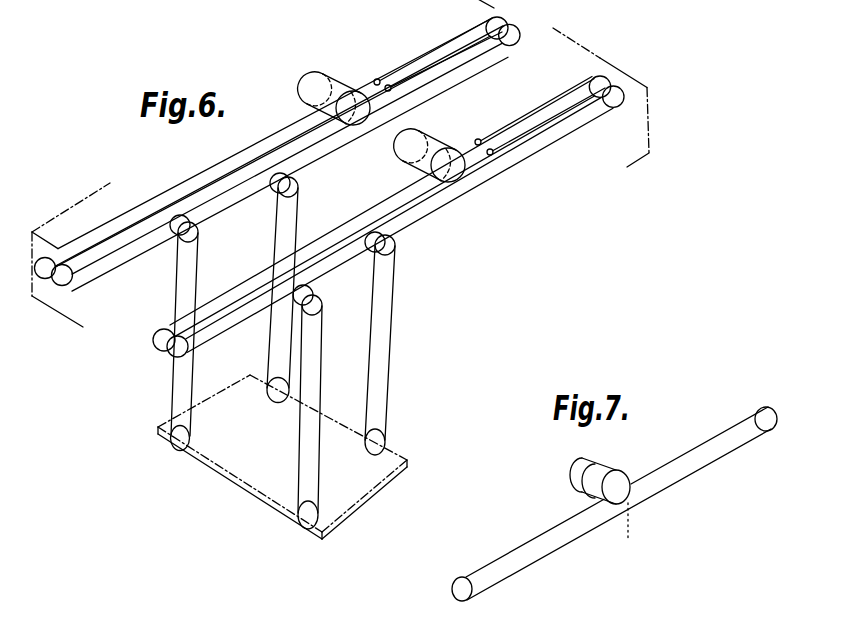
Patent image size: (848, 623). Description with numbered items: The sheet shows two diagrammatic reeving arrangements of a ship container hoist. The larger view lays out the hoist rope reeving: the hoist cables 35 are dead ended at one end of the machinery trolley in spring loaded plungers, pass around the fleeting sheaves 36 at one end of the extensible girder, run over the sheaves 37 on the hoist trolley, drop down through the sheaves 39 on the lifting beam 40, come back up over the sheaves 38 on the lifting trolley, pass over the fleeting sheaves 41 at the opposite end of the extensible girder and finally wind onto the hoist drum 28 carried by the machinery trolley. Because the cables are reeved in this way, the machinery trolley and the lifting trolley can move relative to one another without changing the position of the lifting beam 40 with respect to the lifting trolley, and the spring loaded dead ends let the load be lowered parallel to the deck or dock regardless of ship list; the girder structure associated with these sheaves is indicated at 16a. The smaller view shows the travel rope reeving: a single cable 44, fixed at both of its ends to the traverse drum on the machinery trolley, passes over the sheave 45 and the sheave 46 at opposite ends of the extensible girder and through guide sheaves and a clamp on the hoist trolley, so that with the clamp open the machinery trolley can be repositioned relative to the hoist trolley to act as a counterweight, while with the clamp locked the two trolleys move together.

In FIG. 6, the frame member 16a is at (128, 0).
In FIG. 6, the hoist drum 28 is at (338, 72).
In FIG. 6, the hoist cables 35 is at (445, 68).
In FIG. 6, the fleeting sheaves 36 is at (547, 4).
In FIG. 6, the sheaves 37 is at (174, 242).
In FIG. 6, the sheaves 38 is at (199, 236).
In FIG. 6, the sheaves 39 is at (270, 397).
In FIG. 6, the lifting beam 40 is at (390, 484).
In FIG. 6, the fleeting sheaves 41 is at (54, 287).
In FIG. 7, the cable 44 is at (712, 438).
In FIG. 7, the sheave 45 is at (771, 407).
In FIG. 7, the sheave 46 is at (452, 590).